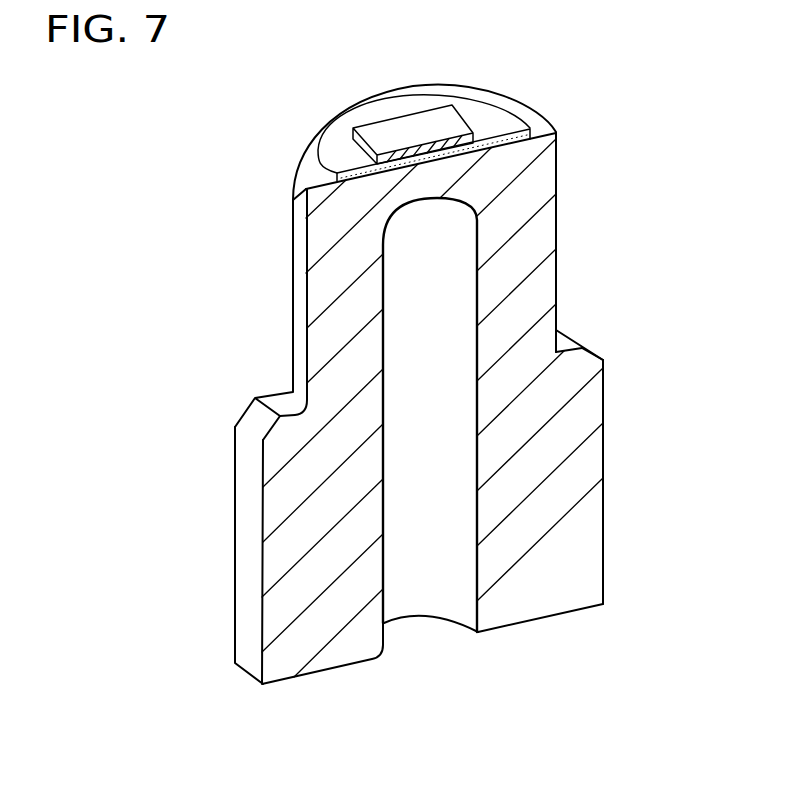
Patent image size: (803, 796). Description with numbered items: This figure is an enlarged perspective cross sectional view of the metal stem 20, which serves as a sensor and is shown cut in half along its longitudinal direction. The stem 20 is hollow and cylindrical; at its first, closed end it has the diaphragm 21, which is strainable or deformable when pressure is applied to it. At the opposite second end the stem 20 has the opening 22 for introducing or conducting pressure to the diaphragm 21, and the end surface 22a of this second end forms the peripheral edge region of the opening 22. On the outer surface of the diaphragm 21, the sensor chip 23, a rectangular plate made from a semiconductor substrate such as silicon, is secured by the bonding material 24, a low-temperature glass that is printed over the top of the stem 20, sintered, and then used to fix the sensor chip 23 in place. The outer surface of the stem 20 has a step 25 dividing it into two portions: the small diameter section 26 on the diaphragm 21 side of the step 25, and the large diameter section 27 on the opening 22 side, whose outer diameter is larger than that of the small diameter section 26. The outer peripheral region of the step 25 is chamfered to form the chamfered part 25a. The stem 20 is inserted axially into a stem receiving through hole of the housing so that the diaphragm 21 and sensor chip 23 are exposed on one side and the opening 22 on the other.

The stem 20 is at (560, 212).
The diaphragm 21 is at (423, 183).
The opening 22 is at (460, 597).
The end surface 22a is at (542, 621).
The sensor chip 23 is at (447, 122).
The bonding material 24 is at (498, 123).
The step 25 is at (558, 340).
The chamfered part 25a is at (583, 349).
The small diameter section 26 is at (557, 254).
The large diameter section 27 is at (605, 462).